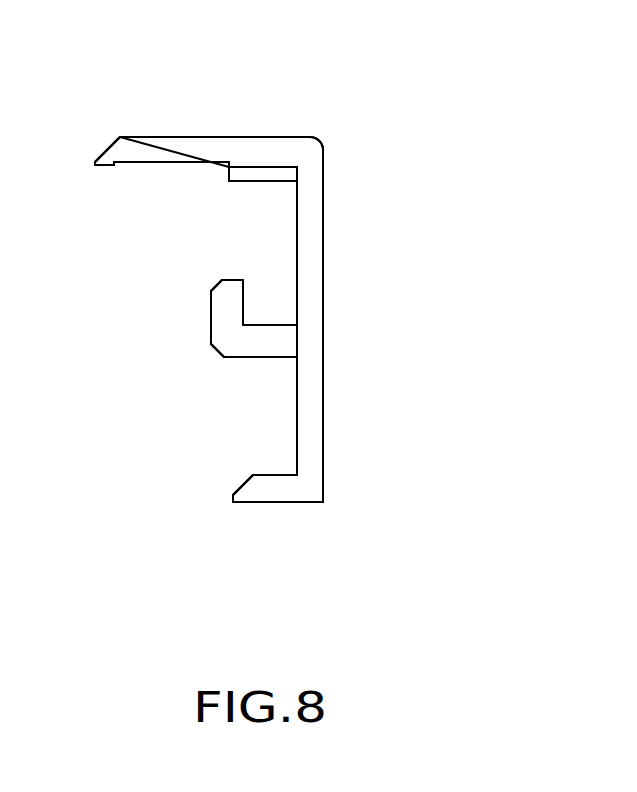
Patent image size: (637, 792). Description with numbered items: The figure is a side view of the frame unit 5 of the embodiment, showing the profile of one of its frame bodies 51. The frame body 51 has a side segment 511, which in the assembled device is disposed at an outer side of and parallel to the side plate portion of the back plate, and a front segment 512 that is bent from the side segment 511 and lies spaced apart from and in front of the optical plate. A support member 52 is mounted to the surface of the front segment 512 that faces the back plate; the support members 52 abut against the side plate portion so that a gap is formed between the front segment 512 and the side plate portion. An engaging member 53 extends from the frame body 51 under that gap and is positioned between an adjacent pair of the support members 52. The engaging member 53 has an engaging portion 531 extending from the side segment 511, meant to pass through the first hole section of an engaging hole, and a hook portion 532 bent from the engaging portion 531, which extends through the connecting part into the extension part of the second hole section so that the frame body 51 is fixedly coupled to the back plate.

The frame unit 5 is at (351, 119).
The frame body 51 is at (358, 287).
The side segment 511 is at (308, 223).
The front segment 512 is at (207, 145).
The support member 52 is at (240, 177).
The engaging member 53 is at (178, 312).
The engaging portion 531 is at (260, 345).
The hook portion 532 is at (225, 300).